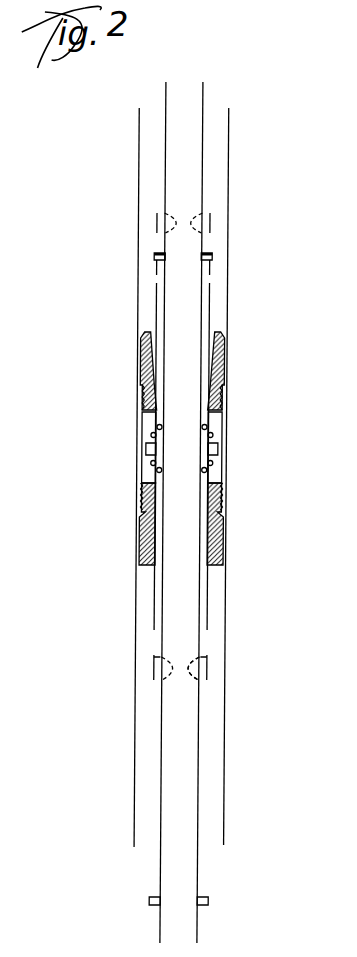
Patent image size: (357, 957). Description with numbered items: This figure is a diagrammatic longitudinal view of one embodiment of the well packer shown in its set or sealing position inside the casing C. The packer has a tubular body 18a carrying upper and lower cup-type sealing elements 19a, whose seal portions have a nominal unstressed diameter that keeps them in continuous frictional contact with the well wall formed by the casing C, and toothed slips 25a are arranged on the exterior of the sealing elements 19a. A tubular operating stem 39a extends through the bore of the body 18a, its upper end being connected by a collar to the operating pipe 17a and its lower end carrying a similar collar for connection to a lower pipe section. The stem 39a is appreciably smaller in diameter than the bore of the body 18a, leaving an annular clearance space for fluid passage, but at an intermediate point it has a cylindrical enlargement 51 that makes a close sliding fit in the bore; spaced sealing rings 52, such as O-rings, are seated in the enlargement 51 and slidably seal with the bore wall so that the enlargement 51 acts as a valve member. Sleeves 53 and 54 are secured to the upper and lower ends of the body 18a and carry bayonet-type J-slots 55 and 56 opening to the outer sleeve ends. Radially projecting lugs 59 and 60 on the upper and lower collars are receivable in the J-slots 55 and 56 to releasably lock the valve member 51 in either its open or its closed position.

The operating pipe 17a is at (204, 92).
The tubular body 18a is at (214, 298).
The cup-type sealing element 19a is at (232, 353).
The toothed slips 25a is at (228, 498).
The tubular operating stem 39a is at (206, 312).
The cylindrical enlargement 51 is at (216, 450).
The sealing rings 52 is at (210, 427).
The upper sleeve 53 is at (214, 222).
The lower sleeve 54 is at (213, 669).
The upper J-slot 55 is at (165, 235).
The lower J-slot 56 is at (205, 655).
The upper lug 59 is at (217, 255).
The lower lug 60 is at (215, 900).
The casing C is at (238, 722).